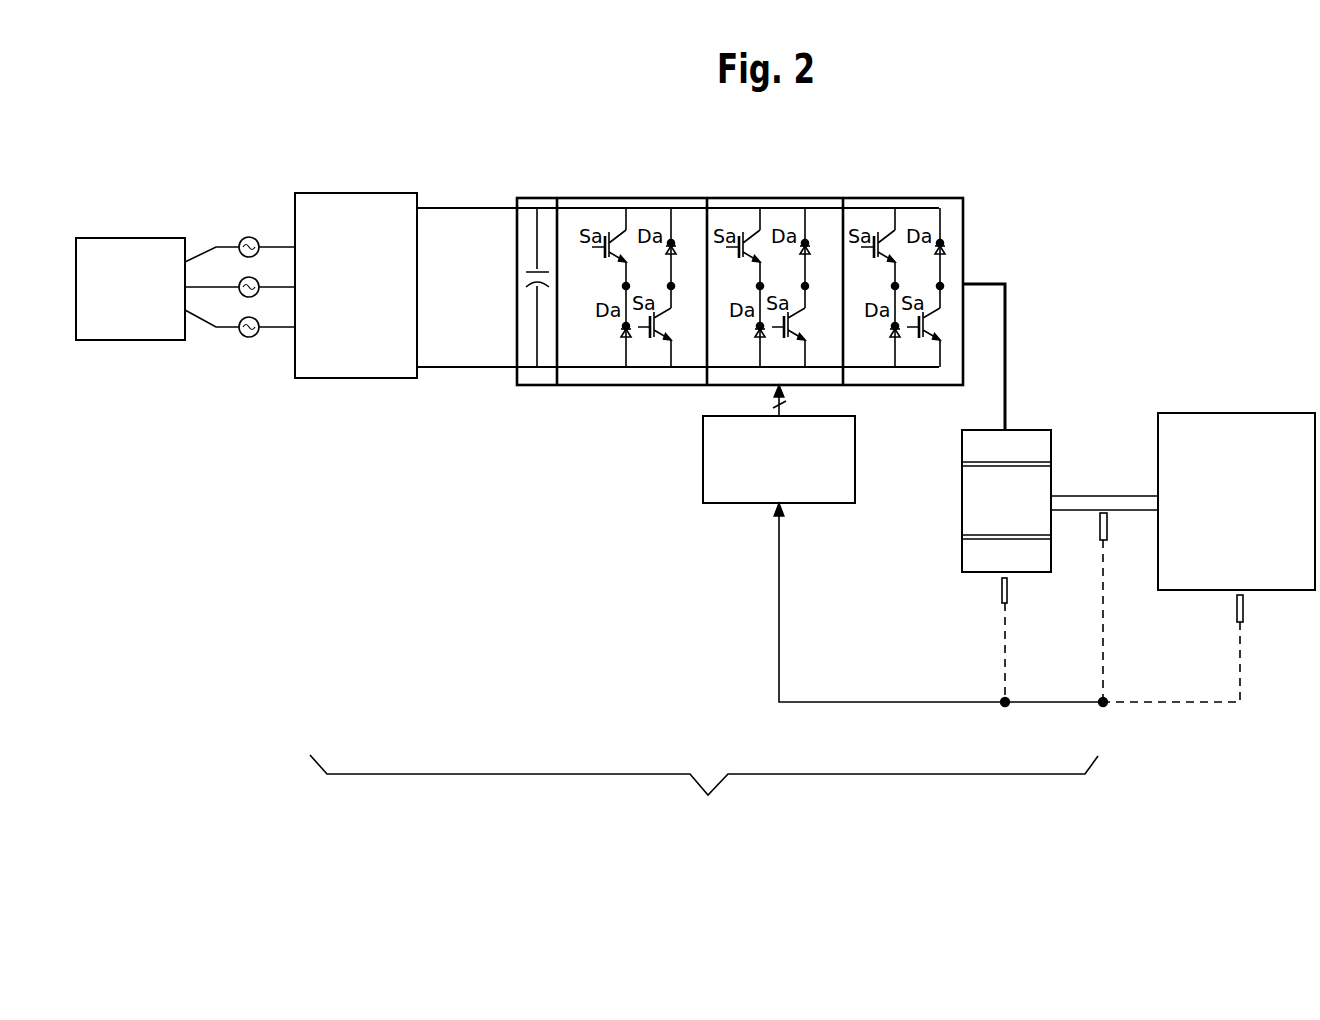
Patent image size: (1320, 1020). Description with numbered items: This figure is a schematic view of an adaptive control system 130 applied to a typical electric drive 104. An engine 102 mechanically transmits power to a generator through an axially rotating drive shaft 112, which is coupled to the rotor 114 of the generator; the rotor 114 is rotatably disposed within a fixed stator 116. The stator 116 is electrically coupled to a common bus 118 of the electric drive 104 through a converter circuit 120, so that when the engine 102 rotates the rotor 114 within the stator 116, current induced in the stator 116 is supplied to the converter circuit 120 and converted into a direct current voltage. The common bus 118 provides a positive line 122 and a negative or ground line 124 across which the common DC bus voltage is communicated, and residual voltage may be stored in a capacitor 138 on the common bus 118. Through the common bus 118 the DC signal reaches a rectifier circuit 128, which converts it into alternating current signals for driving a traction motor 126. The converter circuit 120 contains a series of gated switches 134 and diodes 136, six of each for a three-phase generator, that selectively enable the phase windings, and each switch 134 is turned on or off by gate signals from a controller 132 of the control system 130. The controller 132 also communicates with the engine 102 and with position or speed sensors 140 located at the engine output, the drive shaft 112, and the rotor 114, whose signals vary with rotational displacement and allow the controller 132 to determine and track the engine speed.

The engine 102 is at (1218, 413).
The electric drive 104 is at (708, 797).
The drive shaft 112 is at (1120, 496).
The rotor 114 is at (962, 520).
The stator 116 is at (962, 449).
The common bus 118 is at (517, 180).
The converter circuit 120 is at (918, 198).
The positive line 122 is at (472, 208).
The negative line 124 is at (472, 367).
The traction motor 126 is at (145, 238).
The rectifier circuit 128 is at (337, 193).
The adaptive control system 130 is at (573, 505).
The controller 132 is at (749, 493).
The switch 134 is at (620, 228).
The diode 136 is at (678, 244).
The capacitor 138 is at (534, 386).
The sensor 140 is at (1009, 593).